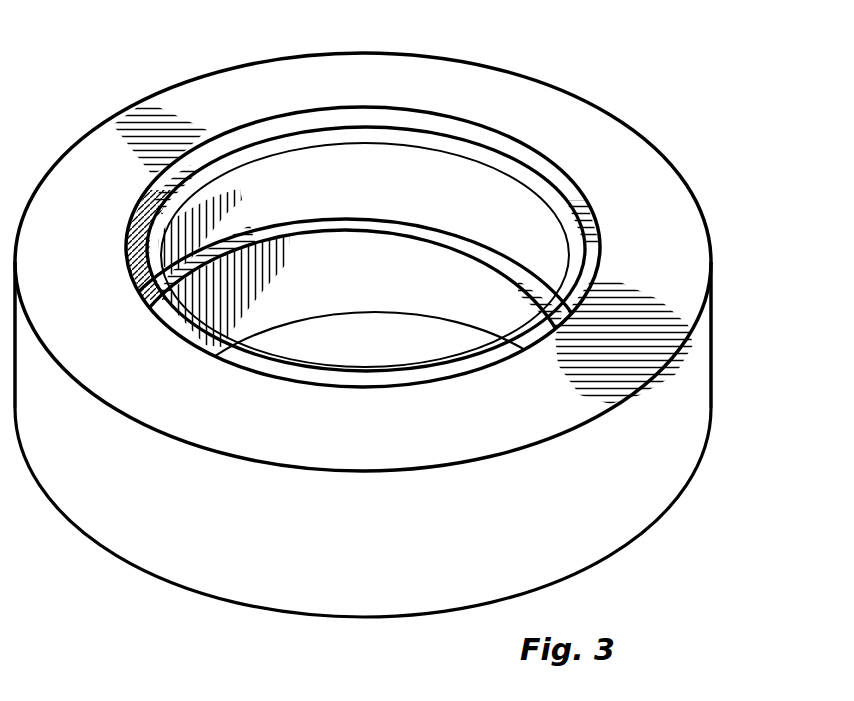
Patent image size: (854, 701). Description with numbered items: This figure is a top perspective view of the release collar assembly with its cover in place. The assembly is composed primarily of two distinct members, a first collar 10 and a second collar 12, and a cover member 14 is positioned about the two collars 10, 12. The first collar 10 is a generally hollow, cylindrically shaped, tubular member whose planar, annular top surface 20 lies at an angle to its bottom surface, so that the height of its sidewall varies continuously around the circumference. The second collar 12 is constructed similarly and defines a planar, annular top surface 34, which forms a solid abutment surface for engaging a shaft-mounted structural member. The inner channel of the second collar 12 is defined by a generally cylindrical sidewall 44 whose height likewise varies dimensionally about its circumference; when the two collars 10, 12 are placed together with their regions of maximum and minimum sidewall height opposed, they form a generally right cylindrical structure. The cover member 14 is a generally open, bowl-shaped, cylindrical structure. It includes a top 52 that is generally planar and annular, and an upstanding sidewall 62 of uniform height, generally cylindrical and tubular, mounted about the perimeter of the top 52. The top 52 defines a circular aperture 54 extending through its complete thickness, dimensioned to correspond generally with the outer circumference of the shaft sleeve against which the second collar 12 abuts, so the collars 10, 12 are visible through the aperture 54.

The first collar 10 is at (338, 302).
The second collar 12 is at (461, 215).
The cover member 14 is at (96, 302).
The top surface 20 is at (413, 235).
The top surface 34 is at (340, 134).
The sidewall 44 is at (346, 192).
The top 52 is at (654, 203).
The aperture 54 is at (498, 222).
The upstanding sidewall 62 is at (679, 395).